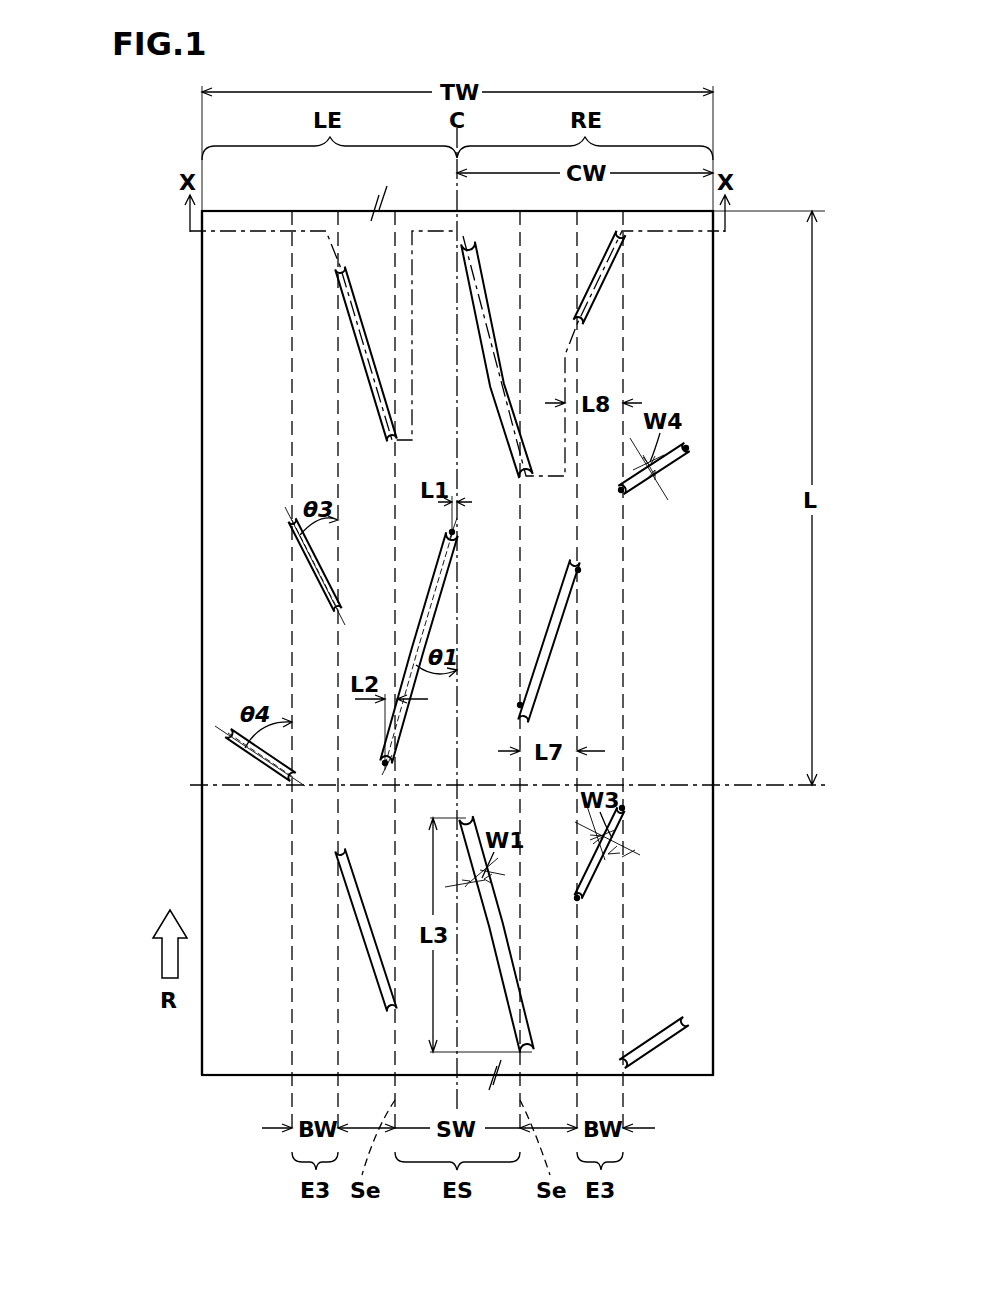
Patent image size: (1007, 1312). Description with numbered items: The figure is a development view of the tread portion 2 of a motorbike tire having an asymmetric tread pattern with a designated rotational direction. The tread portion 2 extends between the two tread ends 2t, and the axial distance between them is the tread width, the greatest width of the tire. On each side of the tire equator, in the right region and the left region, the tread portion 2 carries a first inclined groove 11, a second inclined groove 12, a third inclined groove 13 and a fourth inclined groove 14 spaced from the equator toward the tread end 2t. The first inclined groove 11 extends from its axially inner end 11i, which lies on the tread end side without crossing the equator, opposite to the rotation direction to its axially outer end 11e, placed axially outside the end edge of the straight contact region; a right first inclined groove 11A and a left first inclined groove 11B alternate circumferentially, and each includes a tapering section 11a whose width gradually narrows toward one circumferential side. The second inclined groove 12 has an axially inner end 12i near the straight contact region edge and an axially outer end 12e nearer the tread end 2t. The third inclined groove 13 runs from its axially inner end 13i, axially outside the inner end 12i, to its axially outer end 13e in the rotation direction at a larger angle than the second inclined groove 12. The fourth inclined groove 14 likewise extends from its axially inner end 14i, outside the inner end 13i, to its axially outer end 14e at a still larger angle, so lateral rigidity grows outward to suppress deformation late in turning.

The tread portion 2 is at (158, 172).
The tread end 2t is at (202, 305).
The first inclined groove 11 is at (458, 508).
The right first inclined groove 11A is at (505, 400).
The left first inclined groove 11B is at (420, 690).
The tapering section 11a is at (505, 990).
The axially inner end of first inclined groove 11i is at (452, 532).
The axially outer end of first inclined groove 11e is at (385, 763).
The second inclined groove 12 is at (365, 355).
The axially outer end of second inclined groove 12e is at (578, 570).
The axially inner end of second inclined groove 12i is at (520, 705).
The third inclined groove 13 is at (600, 280).
The axially outer end of third inclined groove 13e is at (622, 808).
The axially inner end of third inclined groove 13i is at (577, 898).
The fourth inclined groove 14 is at (660, 468).
The axially outer end of fourth inclined groove 14e is at (685, 447).
The axially inner end of fourth inclined groove 14i is at (620, 490).